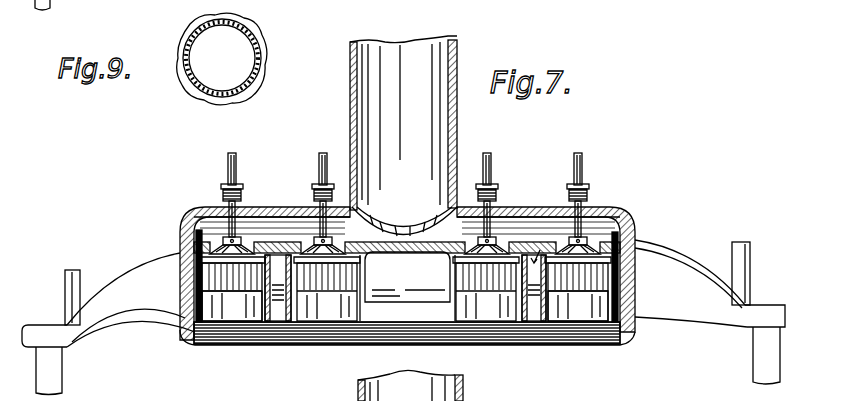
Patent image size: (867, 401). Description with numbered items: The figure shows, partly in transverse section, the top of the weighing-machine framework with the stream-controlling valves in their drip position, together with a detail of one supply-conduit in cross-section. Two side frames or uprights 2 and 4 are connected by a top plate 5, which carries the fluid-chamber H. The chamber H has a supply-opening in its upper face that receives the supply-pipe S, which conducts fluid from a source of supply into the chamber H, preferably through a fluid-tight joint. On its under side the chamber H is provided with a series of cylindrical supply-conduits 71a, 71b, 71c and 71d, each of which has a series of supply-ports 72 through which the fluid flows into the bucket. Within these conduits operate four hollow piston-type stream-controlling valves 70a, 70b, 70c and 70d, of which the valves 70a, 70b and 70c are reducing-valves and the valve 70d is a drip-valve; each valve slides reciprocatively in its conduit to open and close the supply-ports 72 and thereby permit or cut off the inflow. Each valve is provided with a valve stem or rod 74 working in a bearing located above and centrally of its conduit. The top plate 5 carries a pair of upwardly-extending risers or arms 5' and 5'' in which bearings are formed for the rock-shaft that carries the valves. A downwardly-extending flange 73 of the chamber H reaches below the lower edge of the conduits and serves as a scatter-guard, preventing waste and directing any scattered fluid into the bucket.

In FIG. 7, the side frame or upright 2 is at (48, 378).
In FIG. 7, the side frame or upright 4 is at (767, 352).
In FIG. 7, the top plate 5 is at (403, 301).
In FIG. 7, the riser or arm 5' is at (84, 290).
In FIG. 7, the riser or arm 5'' is at (726, 269).
In FIG. 7, the stream-controlling valve 70a is at (222, 280).
In FIG. 7, the stream-controlling valve 70b is at (358, 269).
In FIG. 7, the stream-controlling valve 70c is at (455, 286).
In FIG. 7, the stream-controlling valve (drip-valve) 70d is at (592, 273).
In FIG. 7, the supply-conduit 71a is at (232, 302).
In FIG. 7, the supply-conduit 71b is at (333, 302).
In FIG. 7, the supply-conduit 71c is at (493, 298).
In FIG. 7, the supply-conduit 71d is at (590, 298).
In FIG. 9, the supply-port 72 is at (245, 64).
In FIG. 7, the supply-port 72 is at (297, 272).
In FIG. 7, the flange (scatter-guard) 73 is at (410, 318).
In FIG. 7, the valve stem or rod 74 is at (226, 178).
In FIG. 7, the supply-pipe S is at (466, 72).
In FIG. 7, the fluid-chamber H is at (628, 204).